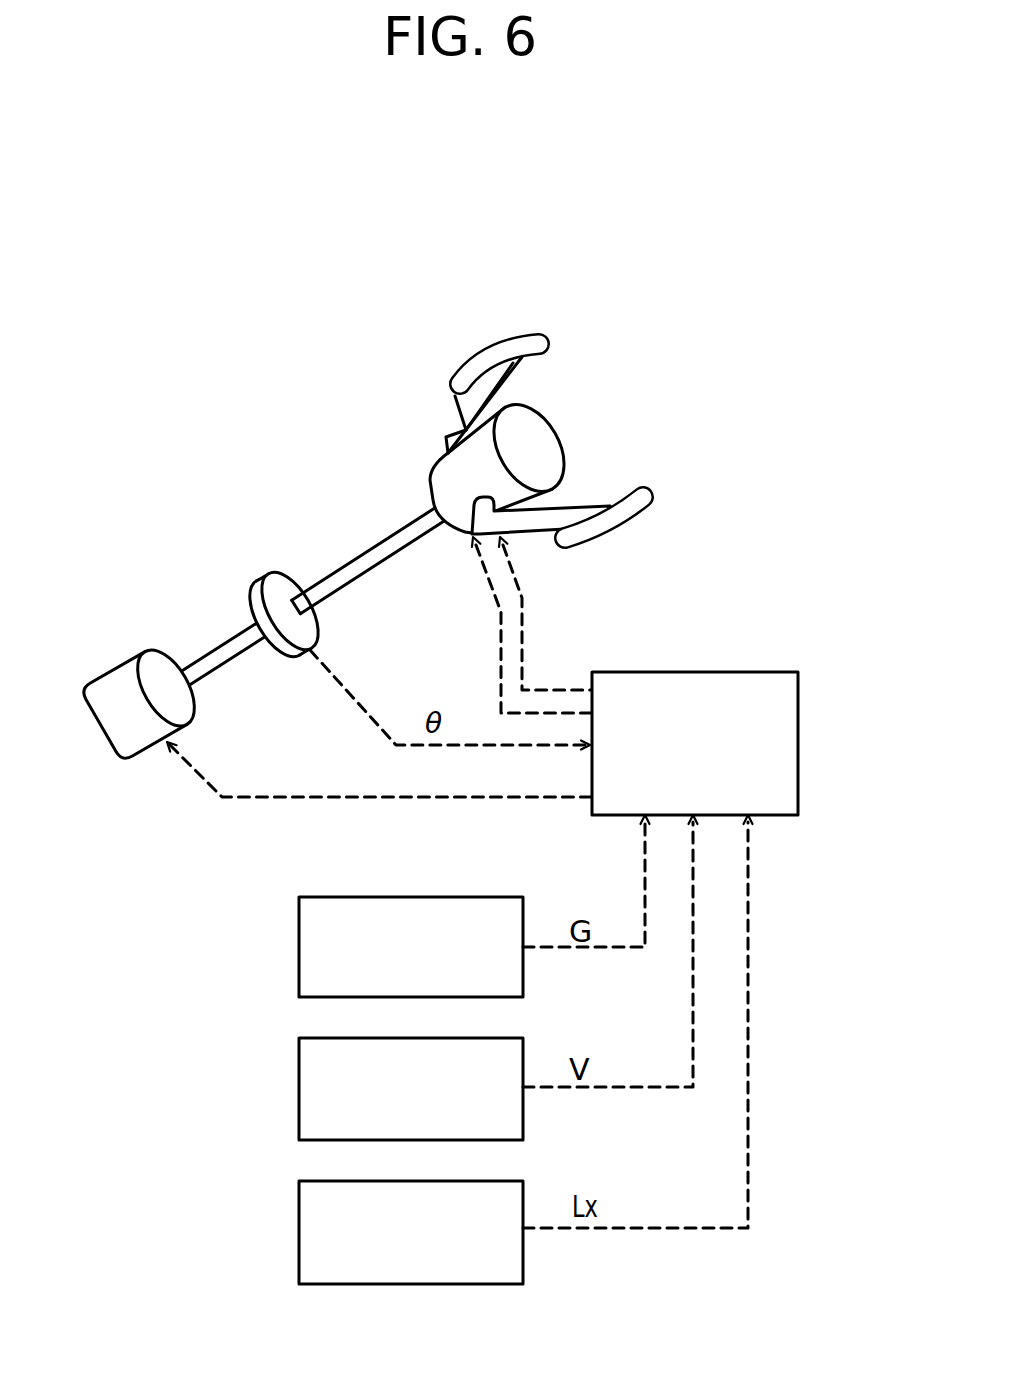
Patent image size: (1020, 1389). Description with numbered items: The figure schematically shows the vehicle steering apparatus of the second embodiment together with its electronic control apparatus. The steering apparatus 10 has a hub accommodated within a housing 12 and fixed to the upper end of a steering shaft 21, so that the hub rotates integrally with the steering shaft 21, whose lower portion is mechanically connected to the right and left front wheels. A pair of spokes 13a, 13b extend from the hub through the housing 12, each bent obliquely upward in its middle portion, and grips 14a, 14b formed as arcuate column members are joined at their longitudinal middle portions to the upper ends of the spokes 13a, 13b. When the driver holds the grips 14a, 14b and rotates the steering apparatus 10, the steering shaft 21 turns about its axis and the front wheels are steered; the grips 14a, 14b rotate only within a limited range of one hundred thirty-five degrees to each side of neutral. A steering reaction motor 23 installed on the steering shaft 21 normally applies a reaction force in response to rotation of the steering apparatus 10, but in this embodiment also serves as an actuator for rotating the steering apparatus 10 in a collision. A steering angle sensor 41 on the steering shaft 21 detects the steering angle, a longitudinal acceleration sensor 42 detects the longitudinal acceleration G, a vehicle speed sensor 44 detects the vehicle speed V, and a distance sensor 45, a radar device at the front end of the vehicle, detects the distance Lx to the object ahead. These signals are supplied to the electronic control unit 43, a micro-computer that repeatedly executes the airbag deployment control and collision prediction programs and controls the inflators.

The steering apparatus 10 is at (516, 427).
The housing 12 is at (523, 402).
The spoke 13a is at (568, 510).
The spoke 13b is at (445, 433).
The grip 14a is at (581, 556).
The grip 14b is at (532, 326).
The steering shaft 21 is at (358, 550).
The steering reaction motor 23 is at (103, 670).
The steering angle sensor 41 is at (262, 572).
The longitudinal acceleration sensor 42 is at (299, 952).
The electronic control unit 43 is at (728, 672).
The vehicle speed sensor 44 is at (299, 1091).
The distance sensor 45 is at (299, 1237).